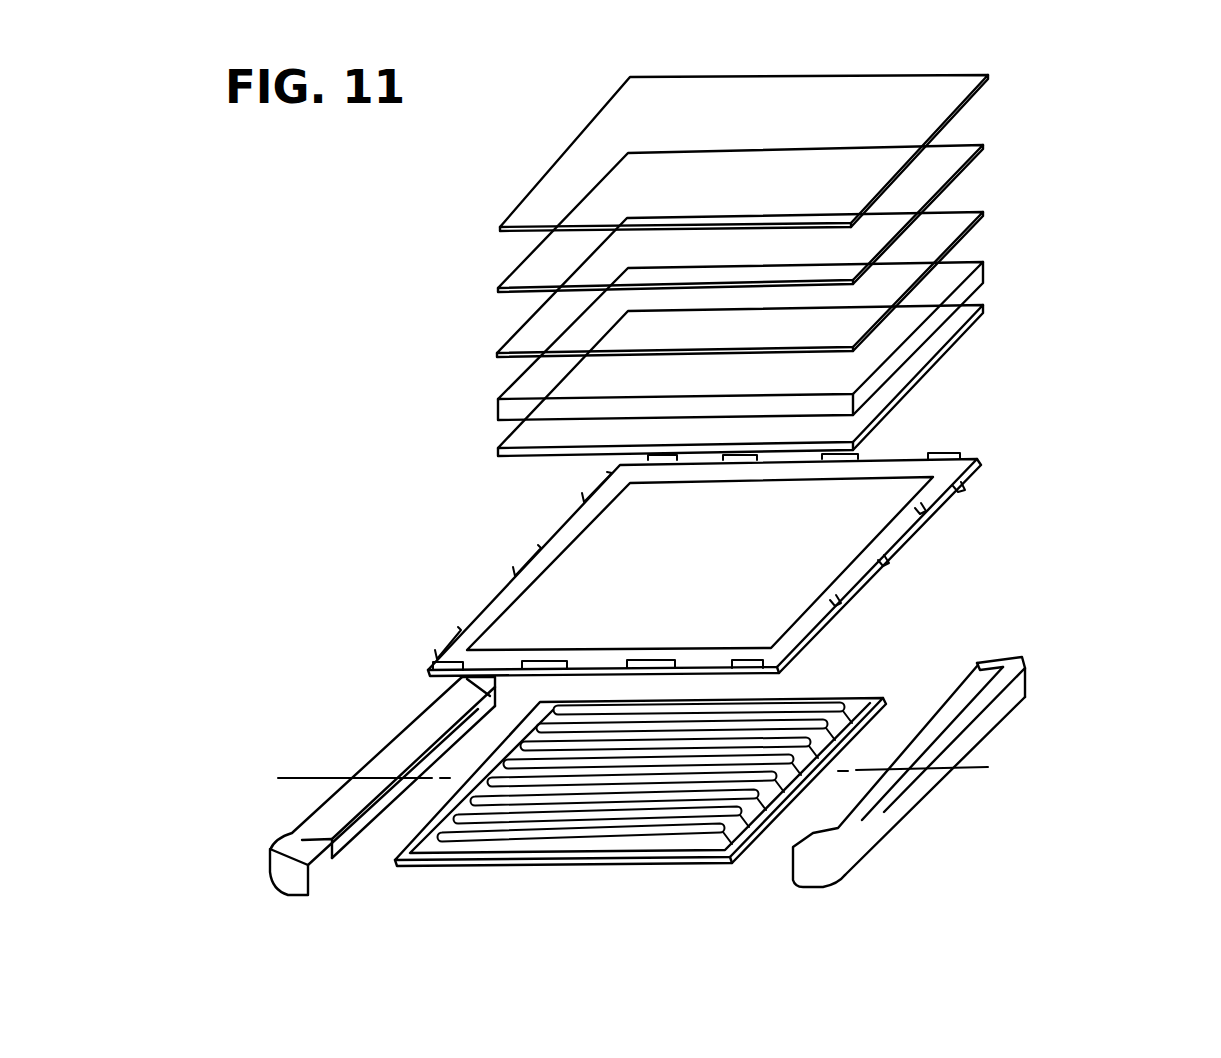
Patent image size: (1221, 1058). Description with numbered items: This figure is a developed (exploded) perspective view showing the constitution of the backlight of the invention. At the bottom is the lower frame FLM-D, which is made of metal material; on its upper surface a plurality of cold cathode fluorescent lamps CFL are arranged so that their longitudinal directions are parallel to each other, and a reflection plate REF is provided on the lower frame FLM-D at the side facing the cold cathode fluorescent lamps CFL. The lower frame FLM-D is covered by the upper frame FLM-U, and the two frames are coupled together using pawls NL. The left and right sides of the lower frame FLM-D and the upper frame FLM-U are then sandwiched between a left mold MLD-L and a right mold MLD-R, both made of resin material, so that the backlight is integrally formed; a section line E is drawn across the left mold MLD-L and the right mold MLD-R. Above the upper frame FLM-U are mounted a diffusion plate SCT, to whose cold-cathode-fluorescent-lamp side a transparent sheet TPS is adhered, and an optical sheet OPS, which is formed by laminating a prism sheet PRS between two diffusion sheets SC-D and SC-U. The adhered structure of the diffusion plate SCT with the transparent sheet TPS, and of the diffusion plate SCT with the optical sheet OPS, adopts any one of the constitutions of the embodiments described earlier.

The diffusion sheet SC-U is at (988, 80).
The prism sheet PRS is at (985, 150).
The diffusion sheet SC-D is at (984, 218).
The optical sheet OPS is at (845, 216).
The diffusion plate SCT is at (985, 283).
The transparent sheet TPS is at (938, 362).
The upper frame FLM-U is at (497, 597).
The pawls NL is at (958, 492).
The lower frame FLM-D is at (670, 862).
The reflection plate REF is at (518, 858).
The cold cathode fluorescent lamps CFL is at (820, 697).
The left mold MLD-L is at (412, 703).
The right mold MLD-R is at (1003, 655).
The section line E- E is at (632, 775).